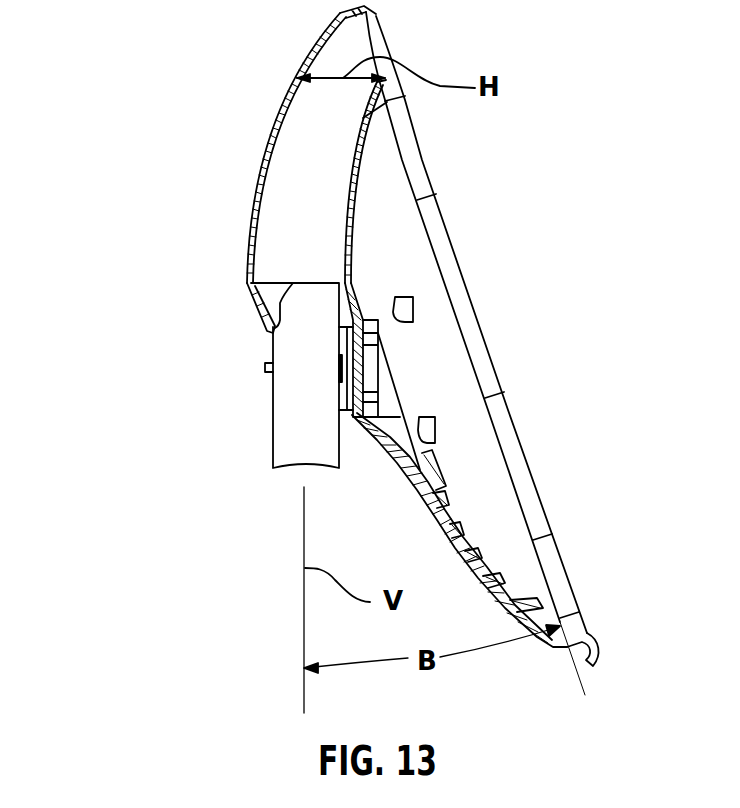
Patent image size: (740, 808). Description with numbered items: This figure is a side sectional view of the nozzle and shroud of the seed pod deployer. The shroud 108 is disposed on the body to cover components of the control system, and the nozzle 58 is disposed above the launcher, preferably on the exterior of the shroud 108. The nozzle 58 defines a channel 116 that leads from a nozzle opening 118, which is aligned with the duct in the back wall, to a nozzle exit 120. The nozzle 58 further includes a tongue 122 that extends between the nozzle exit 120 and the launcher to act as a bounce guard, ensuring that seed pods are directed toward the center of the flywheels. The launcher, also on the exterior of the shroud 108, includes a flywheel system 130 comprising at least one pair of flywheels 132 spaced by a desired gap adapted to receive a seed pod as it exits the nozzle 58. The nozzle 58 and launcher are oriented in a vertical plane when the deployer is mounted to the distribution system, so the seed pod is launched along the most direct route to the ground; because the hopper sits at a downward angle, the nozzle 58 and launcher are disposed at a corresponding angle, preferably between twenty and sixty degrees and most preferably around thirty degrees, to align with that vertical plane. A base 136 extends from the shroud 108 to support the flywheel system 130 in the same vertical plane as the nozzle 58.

The nozzle 58 is at (250, 196).
The shroud 108 is at (497, 533).
The channel 116 is at (292, 126).
The nozzle opening 118 is at (357, 40).
The nozzle exit 120 is at (270, 256).
The tongue 122 is at (251, 305).
The flywheel system 130 is at (225, 421).
The flywheels 132 is at (287, 437).
The base 136 is at (355, 417).